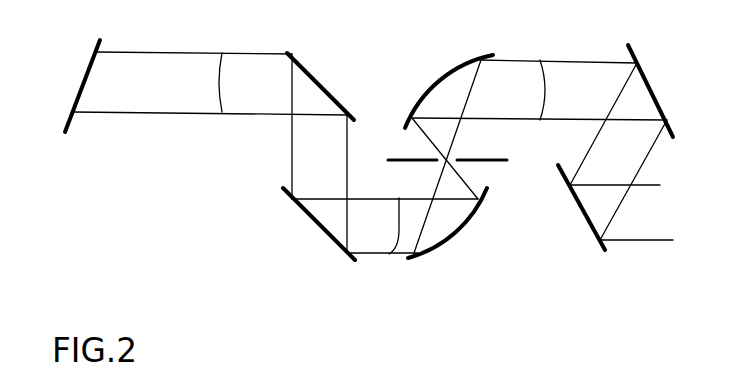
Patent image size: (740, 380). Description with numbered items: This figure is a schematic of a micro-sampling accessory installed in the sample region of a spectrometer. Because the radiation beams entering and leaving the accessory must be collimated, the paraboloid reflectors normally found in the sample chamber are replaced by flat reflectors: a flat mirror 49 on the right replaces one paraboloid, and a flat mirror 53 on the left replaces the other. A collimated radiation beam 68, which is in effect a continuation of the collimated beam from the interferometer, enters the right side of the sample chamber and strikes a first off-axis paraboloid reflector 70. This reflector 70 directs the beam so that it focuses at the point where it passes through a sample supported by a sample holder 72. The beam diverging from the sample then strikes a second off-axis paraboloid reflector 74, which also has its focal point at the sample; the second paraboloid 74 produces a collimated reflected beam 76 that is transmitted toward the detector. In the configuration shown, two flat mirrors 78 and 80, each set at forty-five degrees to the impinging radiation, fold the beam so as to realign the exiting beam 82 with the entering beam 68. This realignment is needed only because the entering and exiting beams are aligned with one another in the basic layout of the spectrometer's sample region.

The flat mirror 49 is at (653, 90).
The flat mirror 53 is at (77, 95).
The collimated radiation beam 68 is at (553, 60).
The first off-axis paraboloid reflector 70 is at (423, 95).
The sample holder 72 is at (450, 144).
The second off-axis paraboloid reflector 74 is at (462, 231).
The collimated reflected beam 76 is at (390, 257).
The flat mirror 78 is at (312, 218).
The flat mirror 80 is at (333, 97).
The exiting beam 82 is at (228, 55).